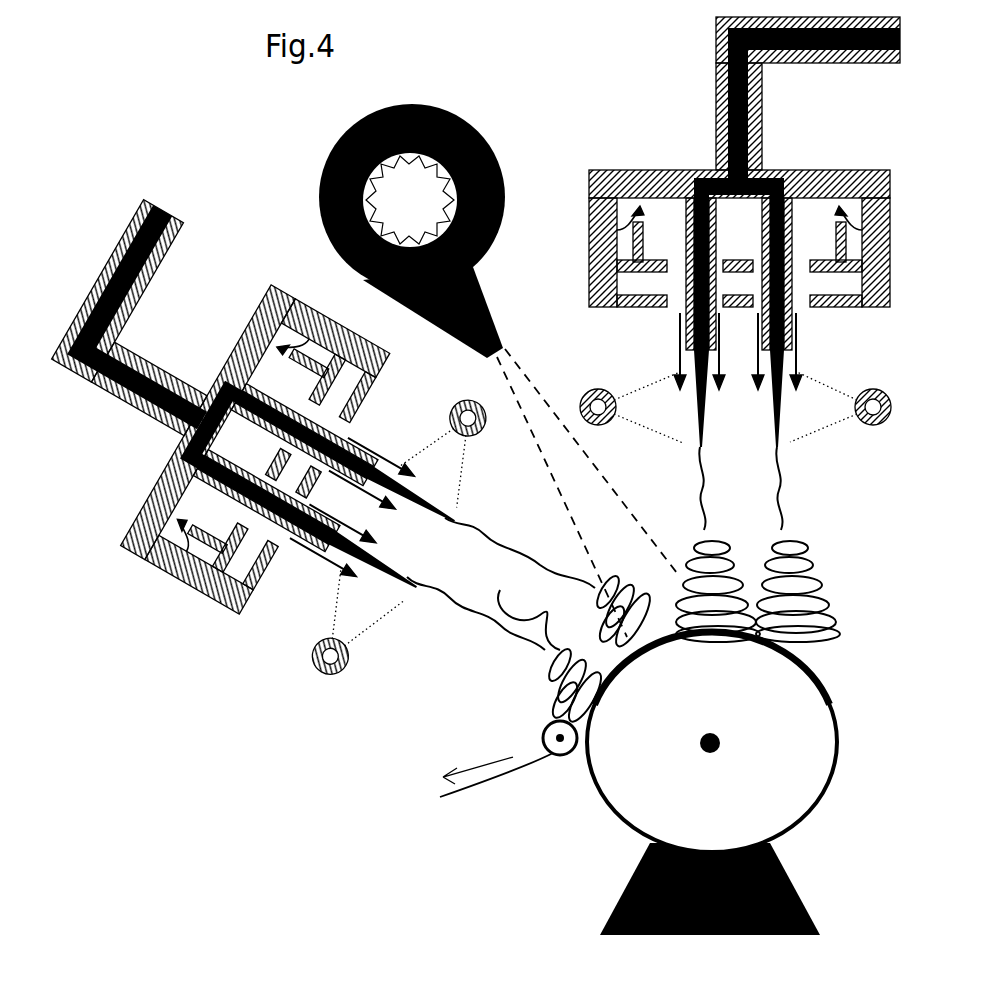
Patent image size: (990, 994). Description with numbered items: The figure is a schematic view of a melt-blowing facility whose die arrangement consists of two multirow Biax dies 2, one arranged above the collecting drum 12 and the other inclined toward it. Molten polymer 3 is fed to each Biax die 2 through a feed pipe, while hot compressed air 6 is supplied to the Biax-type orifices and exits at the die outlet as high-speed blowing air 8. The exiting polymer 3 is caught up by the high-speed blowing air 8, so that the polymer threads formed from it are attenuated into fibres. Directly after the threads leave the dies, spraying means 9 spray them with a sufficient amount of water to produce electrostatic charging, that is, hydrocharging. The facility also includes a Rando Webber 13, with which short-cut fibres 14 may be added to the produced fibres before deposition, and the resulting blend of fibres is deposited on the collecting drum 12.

The multirow Biax die 2 is at (845, 172).
The molten polymer 3 is at (902, 40).
The hot compressed air 6 is at (617, 230).
The high-speed blowing air 8 is at (797, 340).
The spraying means 9 is at (885, 397).
The collecting drum 12 is at (834, 706).
The Rando Webber 13 is at (474, 132).
The short-cut fibres 14 is at (590, 460).